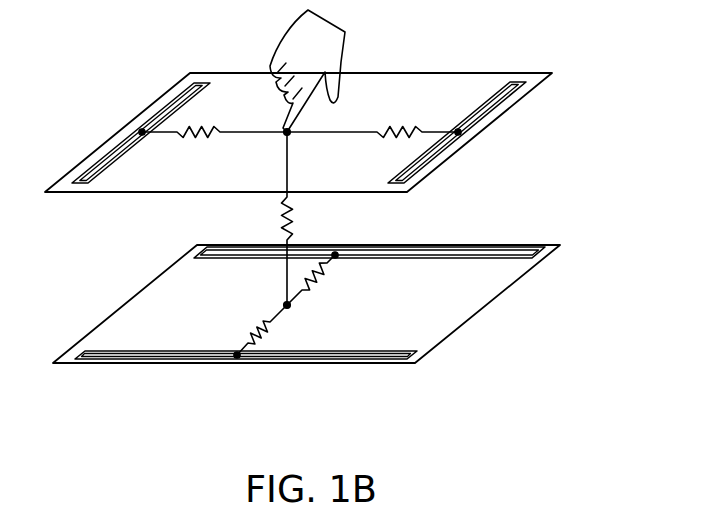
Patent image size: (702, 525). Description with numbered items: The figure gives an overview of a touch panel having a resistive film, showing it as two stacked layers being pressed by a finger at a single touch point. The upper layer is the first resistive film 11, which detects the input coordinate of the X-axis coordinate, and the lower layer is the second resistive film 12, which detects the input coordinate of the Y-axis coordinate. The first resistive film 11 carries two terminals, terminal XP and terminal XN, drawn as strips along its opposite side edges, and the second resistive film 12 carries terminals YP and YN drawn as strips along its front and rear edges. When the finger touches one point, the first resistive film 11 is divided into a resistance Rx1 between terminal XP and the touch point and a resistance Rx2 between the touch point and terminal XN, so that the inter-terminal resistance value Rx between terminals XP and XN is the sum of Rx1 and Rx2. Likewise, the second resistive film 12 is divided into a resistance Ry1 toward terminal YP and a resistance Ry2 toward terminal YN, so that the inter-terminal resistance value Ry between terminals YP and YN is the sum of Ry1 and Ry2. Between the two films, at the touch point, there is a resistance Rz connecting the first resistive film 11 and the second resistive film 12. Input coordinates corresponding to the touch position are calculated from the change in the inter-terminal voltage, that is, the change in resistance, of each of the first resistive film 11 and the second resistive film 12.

The first resistive film 11 is at (530, 73).
The second resistive film 12 is at (536, 226).
The terminal XP is at (142, 130).
The terminal XN is at (471, 131).
The terminal YP is at (337, 252).
The terminal YN is at (239, 360).
The resistance Rx1 is at (214, 121).
The resistance Rx2 is at (372, 120).
The resistance Rz is at (305, 218).
The resistance Ry1 is at (327, 280).
The resistance Ry2 is at (276, 330).